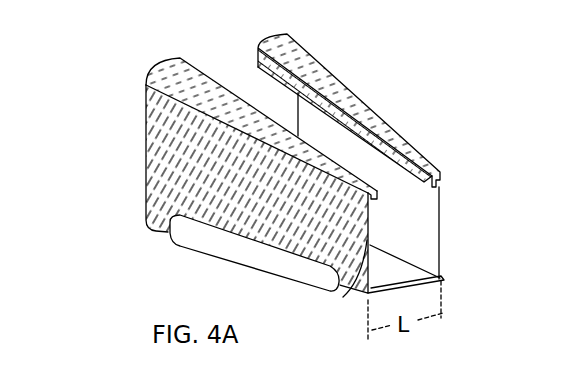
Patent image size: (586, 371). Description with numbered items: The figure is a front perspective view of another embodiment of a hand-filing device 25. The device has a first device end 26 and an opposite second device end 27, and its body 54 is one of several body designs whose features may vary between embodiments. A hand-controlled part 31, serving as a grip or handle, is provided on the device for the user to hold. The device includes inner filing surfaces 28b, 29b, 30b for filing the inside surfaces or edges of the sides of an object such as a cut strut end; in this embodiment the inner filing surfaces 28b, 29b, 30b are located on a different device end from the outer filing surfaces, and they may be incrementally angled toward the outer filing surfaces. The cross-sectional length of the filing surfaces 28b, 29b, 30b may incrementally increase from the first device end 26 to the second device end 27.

The hand-filing device 25 is at (380, 72).
The first device end 26 is at (217, 194).
The body 54 is at (190, 160).
The hand-controlled part 31 is at (242, 252).
The inner filing surface 30b is at (343, 297).
The second device end 27 is at (445, 233).
The inner filing surface 28b is at (425, 202).
The inner filing surface 29b is at (408, 283).